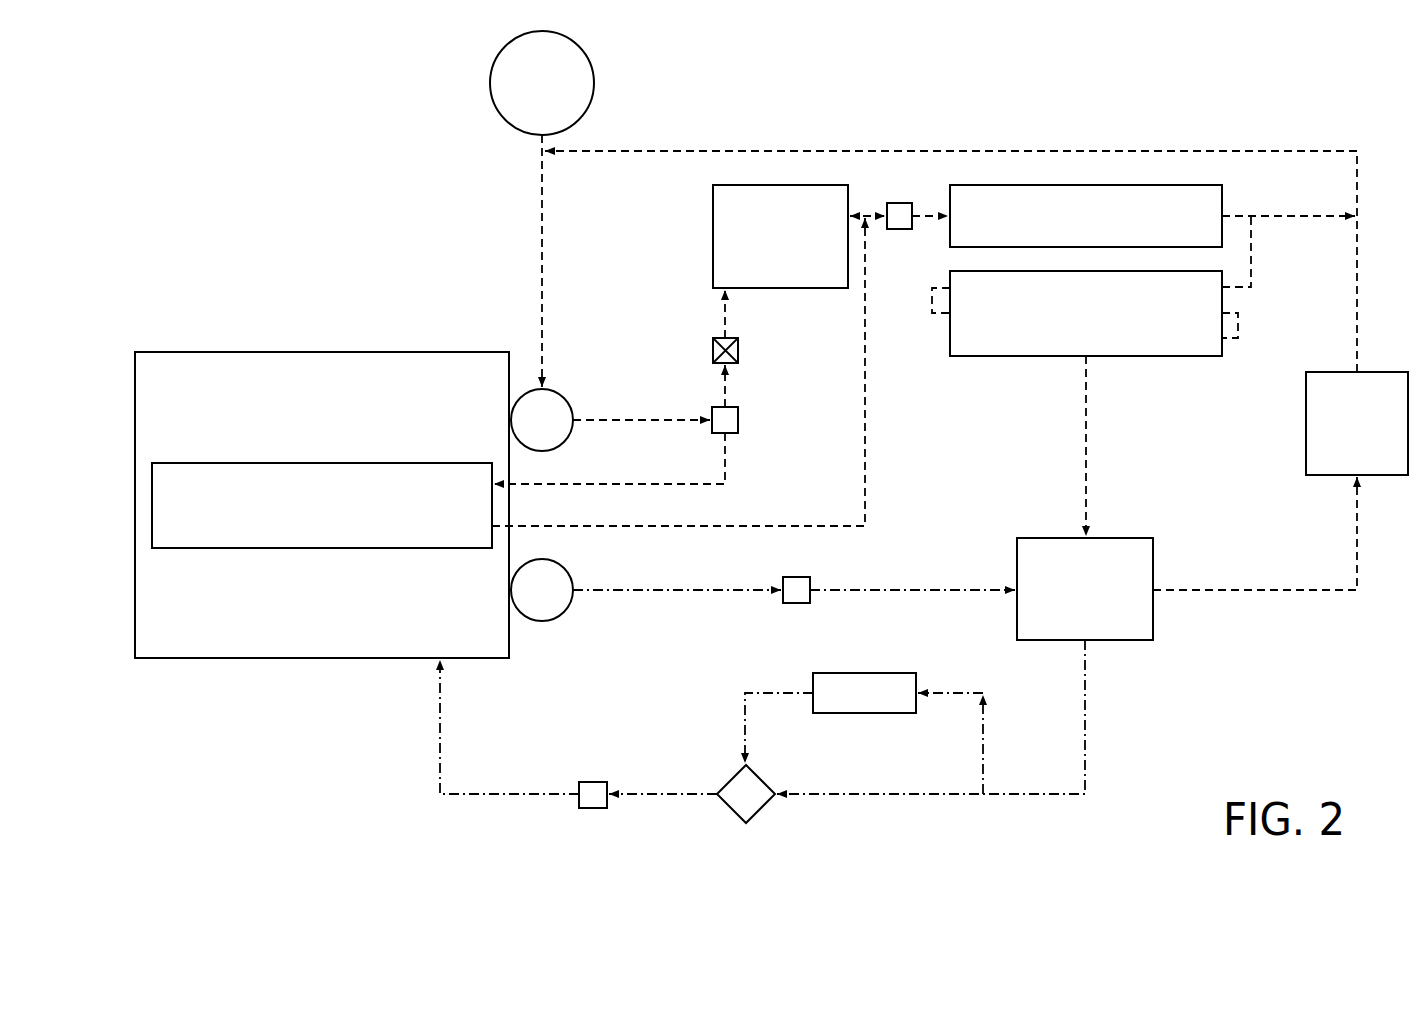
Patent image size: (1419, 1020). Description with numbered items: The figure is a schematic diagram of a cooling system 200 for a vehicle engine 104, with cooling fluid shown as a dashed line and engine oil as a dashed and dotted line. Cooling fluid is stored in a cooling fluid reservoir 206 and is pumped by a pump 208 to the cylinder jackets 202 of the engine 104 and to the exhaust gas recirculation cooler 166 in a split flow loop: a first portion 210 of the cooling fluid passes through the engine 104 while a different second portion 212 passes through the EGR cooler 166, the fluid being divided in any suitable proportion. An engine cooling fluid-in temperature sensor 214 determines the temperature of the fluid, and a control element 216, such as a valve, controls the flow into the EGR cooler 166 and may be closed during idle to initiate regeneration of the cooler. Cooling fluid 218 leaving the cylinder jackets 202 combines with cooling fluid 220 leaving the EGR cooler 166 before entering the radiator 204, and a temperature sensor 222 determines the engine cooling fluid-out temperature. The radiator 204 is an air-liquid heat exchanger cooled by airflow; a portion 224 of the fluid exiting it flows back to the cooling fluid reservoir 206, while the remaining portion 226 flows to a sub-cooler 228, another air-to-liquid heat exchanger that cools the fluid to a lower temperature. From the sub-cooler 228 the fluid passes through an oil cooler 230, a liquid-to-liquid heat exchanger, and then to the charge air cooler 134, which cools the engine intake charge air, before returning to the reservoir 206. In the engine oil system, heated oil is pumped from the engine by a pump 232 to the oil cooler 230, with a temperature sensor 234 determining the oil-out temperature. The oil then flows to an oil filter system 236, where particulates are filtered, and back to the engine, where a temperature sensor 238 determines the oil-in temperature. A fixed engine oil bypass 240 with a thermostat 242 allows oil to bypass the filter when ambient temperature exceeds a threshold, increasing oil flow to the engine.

The cooling system 200 is at (310, 146).
The engine 104 is at (323, 352).
The cylinder jackets 202 is at (339, 517).
The cooling fluid reservoir 206 is at (559, 95).
The pump 208 is at (559, 432).
The first portion of cooling fluid 210 is at (612, 484).
The second portion of cooling fluid 212 is at (726, 398).
The engine cooling fluid-in temperature sensor 214 is at (740, 428).
The control element 216 is at (740, 350).
The exhaust gas recirculation cooler 166 is at (797, 248).
The cooling fluid leaving cylinder jackets 218 is at (770, 526).
The cooling fluid leaving EGR cooler 220 is at (856, 214).
The temperature sensor 222 is at (891, 229).
The radiator 204 is at (1103, 228).
The portion of cooling fluid 224 is at (1277, 216).
The remaining portion of cooling fluid 226 is at (1252, 275).
The sub-cooler 228 is at (1103, 325).
The charge air cooler 134 is at (1374, 435).
The oil cooler 230 is at (1102, 602).
The pump 232 is at (559, 602).
The temperature sensor 234 is at (797, 576).
The oil filter system 236 is at (763, 779).
The temperature sensor 238 is at (593, 782).
The fixed engine oil bypass 240 is at (932, 670).
The thermostat 242 is at (881, 705).